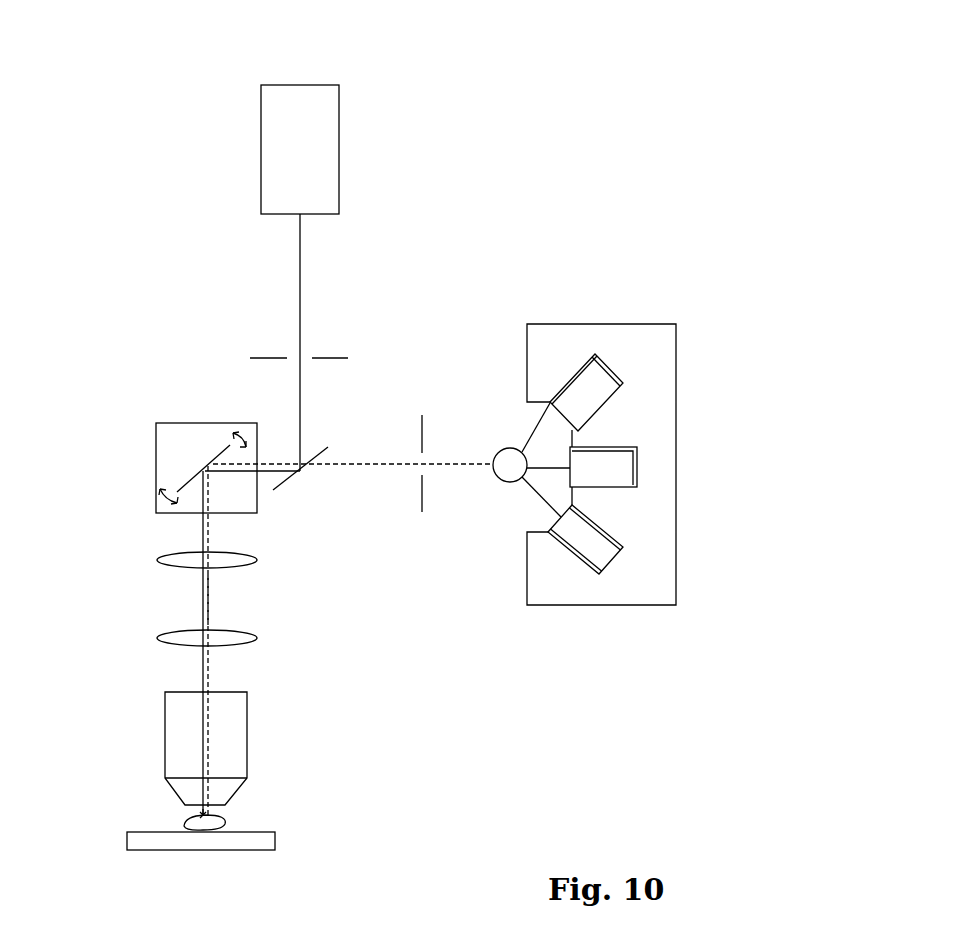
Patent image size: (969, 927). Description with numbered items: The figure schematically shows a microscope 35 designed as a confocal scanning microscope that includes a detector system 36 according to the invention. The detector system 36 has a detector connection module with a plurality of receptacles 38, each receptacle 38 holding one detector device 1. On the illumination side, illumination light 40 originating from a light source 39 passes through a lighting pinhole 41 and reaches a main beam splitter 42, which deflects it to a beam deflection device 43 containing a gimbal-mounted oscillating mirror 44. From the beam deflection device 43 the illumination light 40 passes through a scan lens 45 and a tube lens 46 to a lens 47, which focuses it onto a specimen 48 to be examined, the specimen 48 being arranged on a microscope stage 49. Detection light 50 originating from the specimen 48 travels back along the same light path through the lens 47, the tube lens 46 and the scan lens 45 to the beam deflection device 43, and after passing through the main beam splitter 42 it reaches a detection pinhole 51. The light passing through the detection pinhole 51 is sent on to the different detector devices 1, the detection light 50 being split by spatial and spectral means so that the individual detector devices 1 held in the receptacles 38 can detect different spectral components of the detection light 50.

The detector device 1 is at (597, 382).
The microscope 35 is at (470, 100).
The detector system 36 is at (609, 203).
The receptacle 38 is at (584, 343).
The light source 39 is at (277, 143).
The illumination light 40 is at (300, 404).
The lighting pinhole 41 is at (250, 339).
The main beam splitter 42 is at (318, 492).
The beam deflection device 43 is at (188, 483).
The gimbal-mounted oscillating mirror 44 is at (176, 454).
The scan lens 45 is at (176, 560).
The tube lens 46 is at (176, 638).
The lens 47 is at (235, 738).
The specimen 48 is at (215, 818).
The microscope stage 49 is at (140, 838).
The detection light 50 is at (210, 603).
The detection pinhole 51 is at (438, 493).